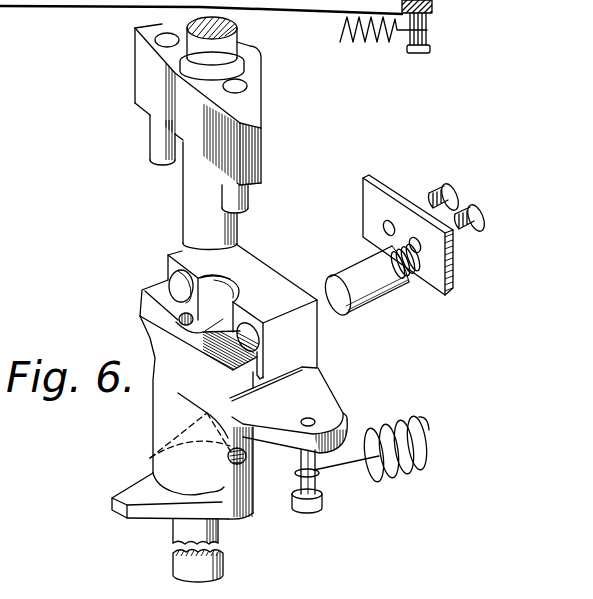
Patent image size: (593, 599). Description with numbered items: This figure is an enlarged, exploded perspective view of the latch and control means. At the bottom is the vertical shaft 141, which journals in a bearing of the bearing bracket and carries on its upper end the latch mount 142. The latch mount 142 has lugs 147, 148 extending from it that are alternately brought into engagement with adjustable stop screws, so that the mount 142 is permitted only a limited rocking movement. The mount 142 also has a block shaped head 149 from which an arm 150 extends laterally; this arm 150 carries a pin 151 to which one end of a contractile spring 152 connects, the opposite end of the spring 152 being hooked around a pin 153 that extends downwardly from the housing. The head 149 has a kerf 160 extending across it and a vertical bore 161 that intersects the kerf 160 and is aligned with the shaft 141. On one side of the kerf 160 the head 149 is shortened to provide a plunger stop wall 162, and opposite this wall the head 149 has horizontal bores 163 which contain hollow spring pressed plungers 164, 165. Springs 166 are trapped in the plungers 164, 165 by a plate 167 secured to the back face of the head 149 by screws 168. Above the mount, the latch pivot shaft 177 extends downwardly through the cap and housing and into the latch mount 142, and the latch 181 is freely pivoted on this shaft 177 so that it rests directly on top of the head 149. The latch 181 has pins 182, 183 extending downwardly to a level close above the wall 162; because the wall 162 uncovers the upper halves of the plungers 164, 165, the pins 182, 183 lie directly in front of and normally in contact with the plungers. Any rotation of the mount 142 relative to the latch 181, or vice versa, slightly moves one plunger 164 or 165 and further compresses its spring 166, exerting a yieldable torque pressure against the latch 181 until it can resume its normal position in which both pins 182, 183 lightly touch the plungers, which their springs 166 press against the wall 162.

The vertical shaft 141 is at (223, 565).
The latch mount 142 is at (158, 441).
The lug 147 is at (155, 424).
The lug 148 is at (120, 517).
The block shaped head 149 is at (305, 349).
The arm 150 is at (313, 407).
The pin 151 is at (318, 490).
The contractile spring 152 is at (375, 43).
The pin 153 is at (428, 41).
The kerf 160 is at (265, 360).
The vertical bore 161 is at (232, 283).
The plunger stop wall 162 is at (153, 292).
The horizontal bores 163 is at (250, 326).
The plunger 164 is at (330, 283).
The plunger 165 is at (168, 280).
The springs 166 is at (406, 280).
The plate 167 is at (380, 200).
The screws 168 is at (454, 192).
The latch pivot shaft 177 is at (190, 194).
The latch 181 is at (255, 110).
The pin 182 is at (249, 200).
The pin 183 is at (155, 146).